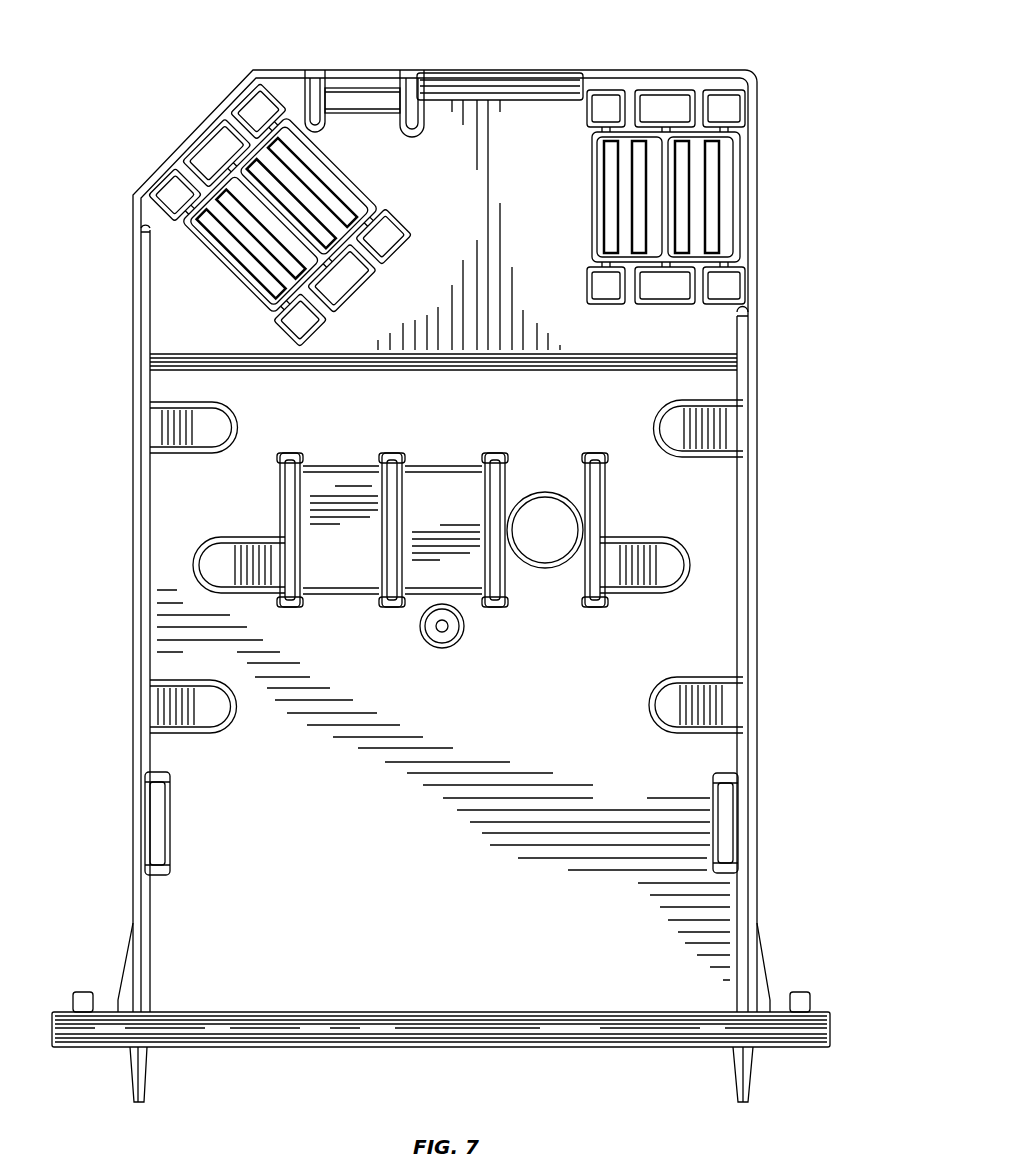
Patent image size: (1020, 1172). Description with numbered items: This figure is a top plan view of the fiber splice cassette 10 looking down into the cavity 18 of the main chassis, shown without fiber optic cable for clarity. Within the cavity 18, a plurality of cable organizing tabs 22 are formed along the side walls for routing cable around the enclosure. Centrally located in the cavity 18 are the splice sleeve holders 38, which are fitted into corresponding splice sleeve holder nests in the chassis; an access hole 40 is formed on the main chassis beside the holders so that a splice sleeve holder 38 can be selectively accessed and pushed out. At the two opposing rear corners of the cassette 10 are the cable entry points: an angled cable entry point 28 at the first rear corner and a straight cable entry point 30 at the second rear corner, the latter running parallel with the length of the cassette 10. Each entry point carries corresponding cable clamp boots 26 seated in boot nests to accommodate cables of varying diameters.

The fiber splice cassette 10 is at (862, 118).
The cavity 18 is at (430, 848).
The cable organizing tabs 22 is at (193, 455).
The cable clamp boots 26 is at (280, 190).
The angled cable entry point 28 is at (198, 128).
The straight cable entry point 30 is at (665, 72).
The splice sleeve holders 38 is at (328, 468).
The access holes 40 is at (525, 545).